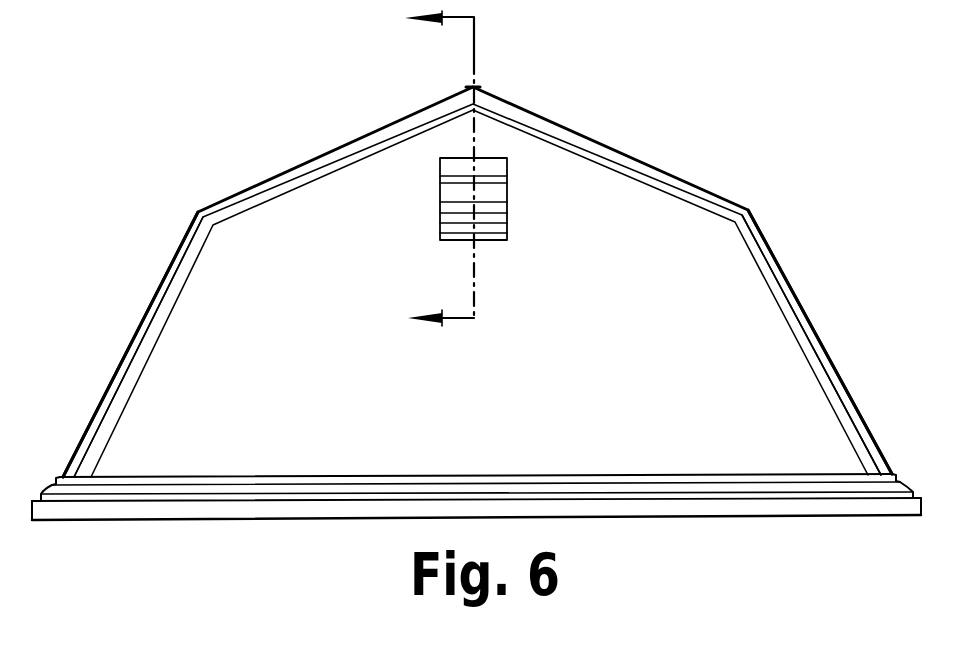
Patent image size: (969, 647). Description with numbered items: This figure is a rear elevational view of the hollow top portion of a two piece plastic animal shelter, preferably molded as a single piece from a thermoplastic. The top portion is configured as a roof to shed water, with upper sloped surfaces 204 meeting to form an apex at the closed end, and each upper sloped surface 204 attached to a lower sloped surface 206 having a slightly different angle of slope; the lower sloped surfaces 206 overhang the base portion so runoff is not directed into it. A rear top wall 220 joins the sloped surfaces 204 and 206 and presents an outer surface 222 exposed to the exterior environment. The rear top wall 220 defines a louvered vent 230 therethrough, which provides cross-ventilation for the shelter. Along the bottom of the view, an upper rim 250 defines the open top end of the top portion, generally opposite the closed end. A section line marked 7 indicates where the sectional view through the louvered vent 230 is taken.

The upper sloped surface 204 is at (343, 146).
The lower sloped surface 206 is at (138, 332).
The rear top wall 220 is at (665, 291).
The outer surface 222 is at (529, 397).
The louvered vent 230 is at (525, 192).
The upper rim 250 is at (773, 515).
The section line 7- 7 is at (433, 169).